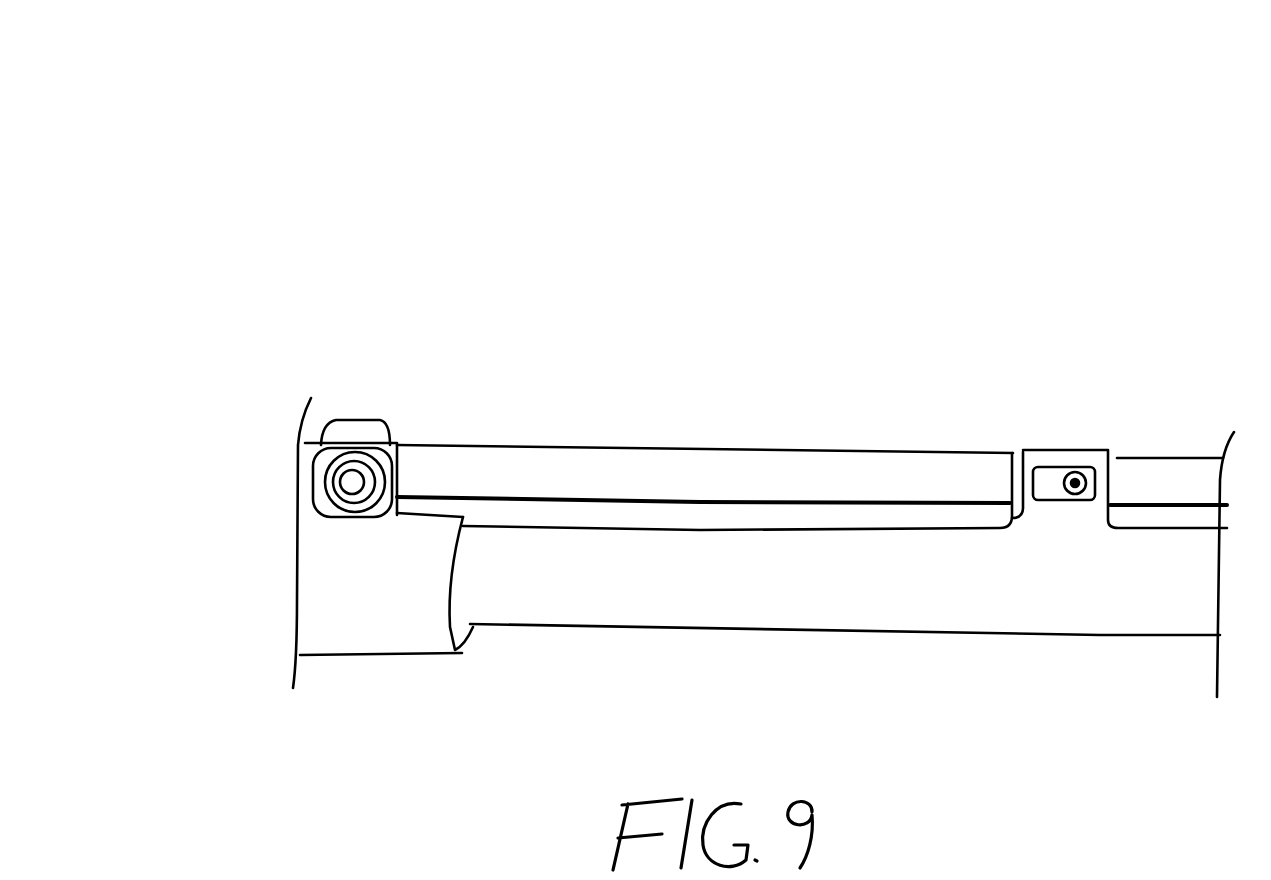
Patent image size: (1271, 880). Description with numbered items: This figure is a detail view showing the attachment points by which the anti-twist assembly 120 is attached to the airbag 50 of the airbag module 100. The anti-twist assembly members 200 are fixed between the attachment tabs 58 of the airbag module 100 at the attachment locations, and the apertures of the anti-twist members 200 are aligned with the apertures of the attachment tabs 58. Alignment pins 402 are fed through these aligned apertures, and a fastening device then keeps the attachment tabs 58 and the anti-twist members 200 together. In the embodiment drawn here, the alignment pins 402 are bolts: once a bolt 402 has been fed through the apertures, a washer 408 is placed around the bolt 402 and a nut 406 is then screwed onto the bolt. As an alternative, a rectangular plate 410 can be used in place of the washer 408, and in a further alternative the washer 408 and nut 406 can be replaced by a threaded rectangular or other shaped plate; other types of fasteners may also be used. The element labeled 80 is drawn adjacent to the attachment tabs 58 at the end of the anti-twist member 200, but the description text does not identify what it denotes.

The airbag module 100 is at (1068, 230).
The anti-twist assembly 120 is at (785, 448).
The anti-twist assembly member 200 is at (625, 460).
The attachment tab 58 is at (390, 455).
The rectangular plate 410 is at (1047, 477).
The alignment pin 402 is at (343, 498).
The washer 408 is at (320, 470).
The nut 406 is at (333, 488).
The hub 80 is at (387, 647).
The airbag 50 is at (1102, 597).